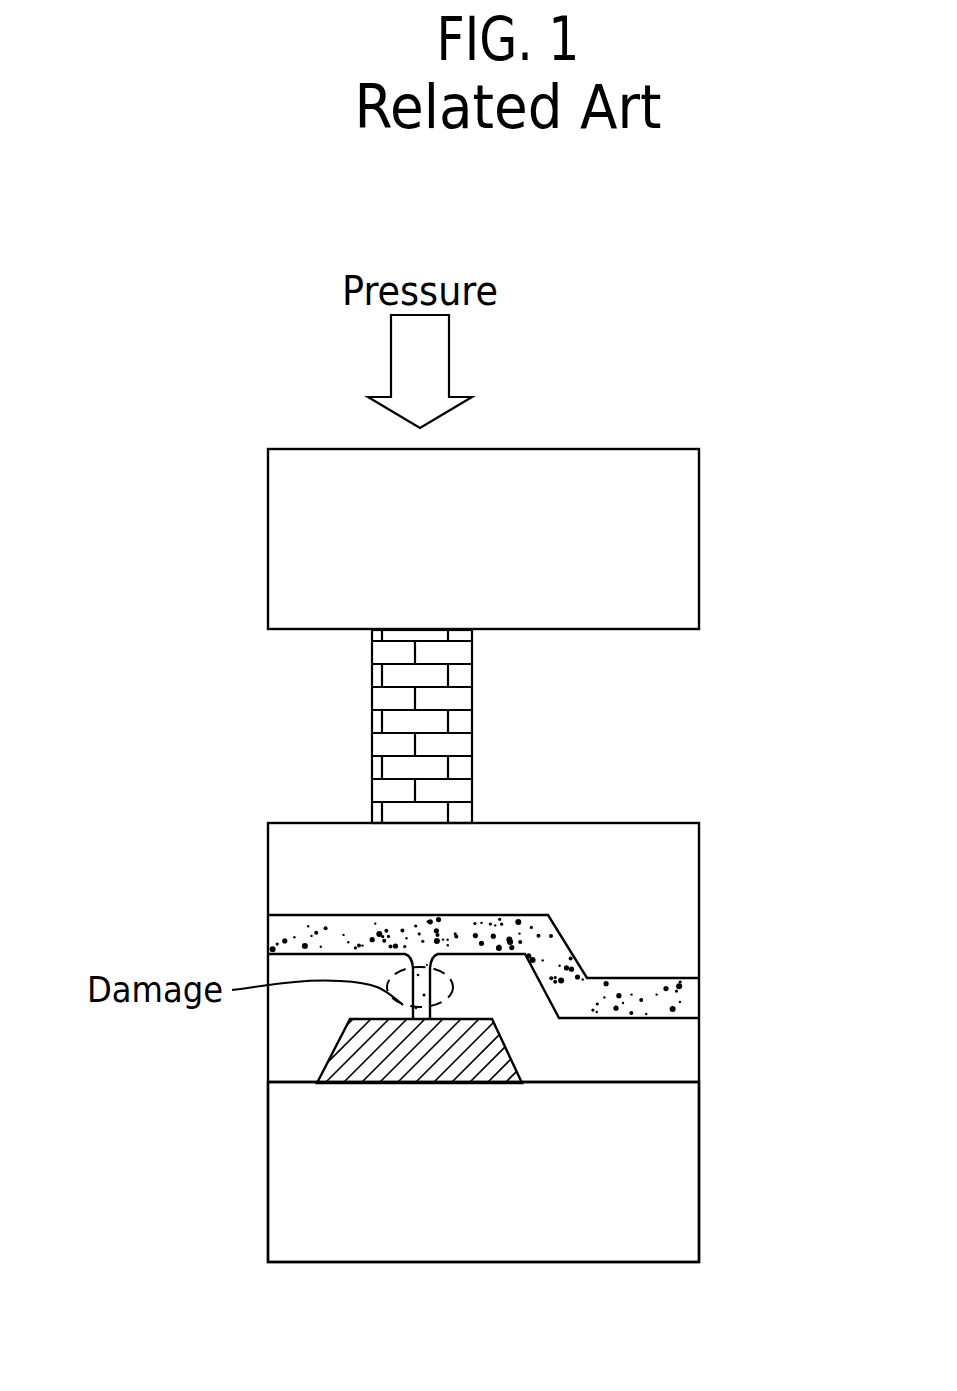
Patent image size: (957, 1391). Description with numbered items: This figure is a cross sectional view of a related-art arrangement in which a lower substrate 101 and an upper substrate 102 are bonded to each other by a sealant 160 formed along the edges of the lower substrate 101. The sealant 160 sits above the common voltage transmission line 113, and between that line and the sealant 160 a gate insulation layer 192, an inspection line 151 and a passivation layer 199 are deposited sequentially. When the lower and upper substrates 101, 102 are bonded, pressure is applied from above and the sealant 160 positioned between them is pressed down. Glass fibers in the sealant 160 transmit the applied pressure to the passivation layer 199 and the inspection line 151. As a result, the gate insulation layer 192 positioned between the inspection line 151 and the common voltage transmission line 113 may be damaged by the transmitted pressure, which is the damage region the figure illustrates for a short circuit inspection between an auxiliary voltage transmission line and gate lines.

The upper substrate 102 is at (690, 534).
The sealant 160 is at (372, 716).
The passivation layer 199 is at (690, 898).
The inspection line 151 is at (690, 997).
The gate insulation layer 192 is at (690, 1052).
The lower substrate 101 is at (690, 1150).
The common voltage transmission line 113 is at (423, 1045).